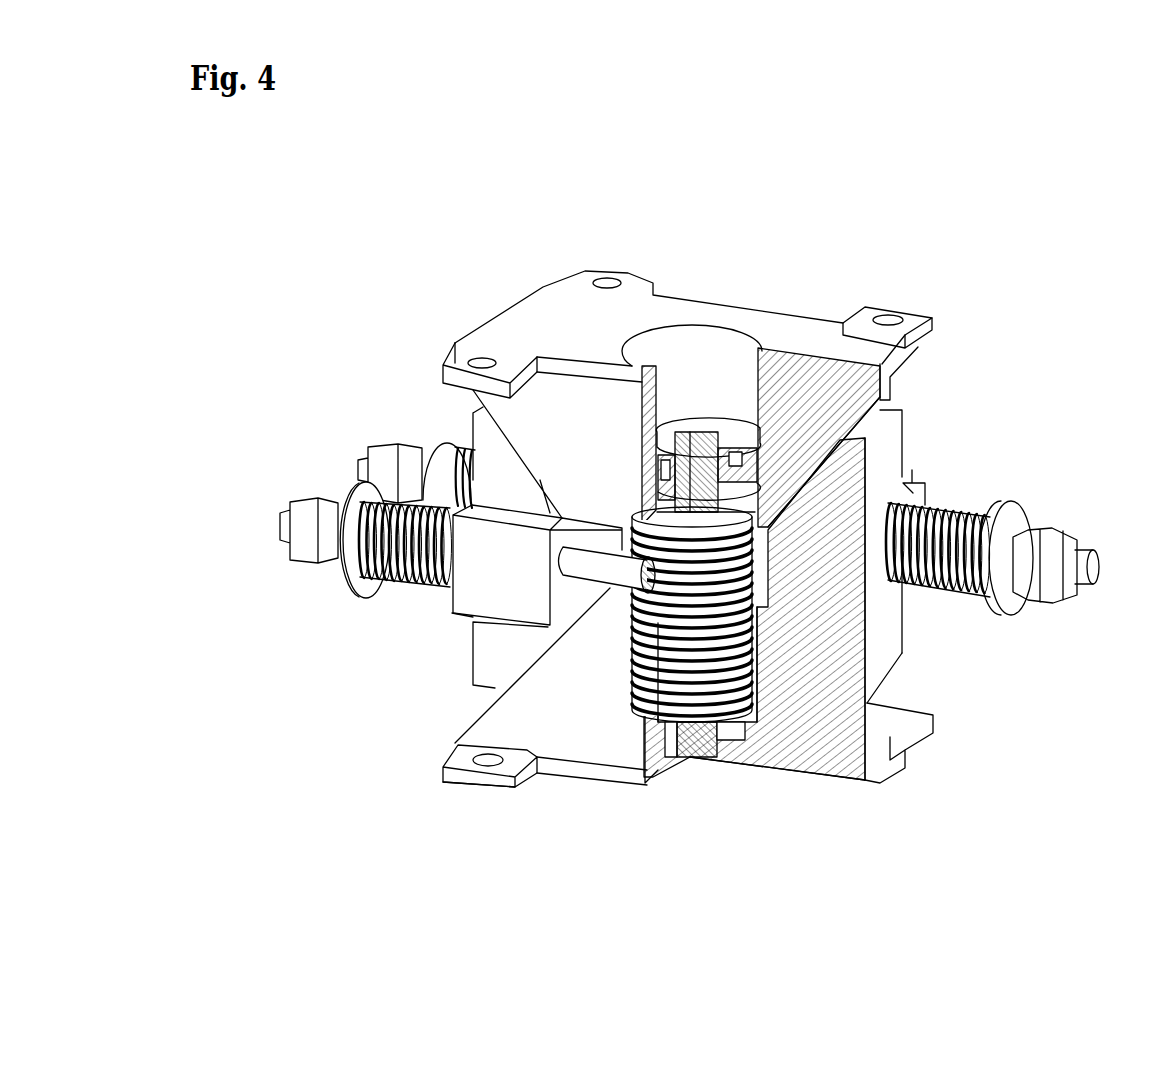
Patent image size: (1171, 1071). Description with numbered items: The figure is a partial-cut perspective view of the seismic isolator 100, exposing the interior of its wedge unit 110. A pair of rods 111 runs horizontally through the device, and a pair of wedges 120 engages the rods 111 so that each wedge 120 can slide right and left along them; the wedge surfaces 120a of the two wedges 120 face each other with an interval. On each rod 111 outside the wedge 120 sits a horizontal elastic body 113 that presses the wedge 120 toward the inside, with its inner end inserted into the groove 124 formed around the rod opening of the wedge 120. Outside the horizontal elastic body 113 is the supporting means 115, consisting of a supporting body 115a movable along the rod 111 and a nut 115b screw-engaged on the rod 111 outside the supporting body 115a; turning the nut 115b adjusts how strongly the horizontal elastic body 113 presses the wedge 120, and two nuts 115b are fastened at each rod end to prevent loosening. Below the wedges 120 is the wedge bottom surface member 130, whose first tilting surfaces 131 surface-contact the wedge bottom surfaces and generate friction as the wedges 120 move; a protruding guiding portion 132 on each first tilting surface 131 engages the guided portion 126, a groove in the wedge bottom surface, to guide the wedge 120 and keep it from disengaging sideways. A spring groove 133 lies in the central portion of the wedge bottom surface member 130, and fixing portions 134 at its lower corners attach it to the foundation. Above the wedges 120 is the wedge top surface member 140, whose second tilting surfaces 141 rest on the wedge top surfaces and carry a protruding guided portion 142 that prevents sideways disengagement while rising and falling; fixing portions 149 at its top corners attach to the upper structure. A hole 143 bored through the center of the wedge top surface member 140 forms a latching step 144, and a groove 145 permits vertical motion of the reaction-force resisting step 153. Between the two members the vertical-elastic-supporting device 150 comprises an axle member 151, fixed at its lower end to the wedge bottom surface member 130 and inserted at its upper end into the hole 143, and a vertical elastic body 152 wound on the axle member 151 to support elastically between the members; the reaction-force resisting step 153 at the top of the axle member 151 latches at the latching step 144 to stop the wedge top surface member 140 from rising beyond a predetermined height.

The seismic isolator 100 is at (350, 274).
The wedge unit 110 is at (936, 486).
The rod 111 is at (1090, 566).
The horizontal elastic body 113 is at (946, 507).
The supporting means 115 is at (1024, 507).
The supporting body 115a is at (1004, 606).
The nut 115b is at (1030, 590).
The wedge 120 is at (450, 598).
The wedge surface 120a is at (720, 758).
The groove 124 is at (905, 590).
The guided portion 126 is at (798, 727).
The wedge bottom surface member 130 is at (830, 755).
The first tilting surface 131 is at (478, 700).
The guiding portion 132 is at (893, 748).
The spring groove 133 is at (492, 766).
The fixing portion 134 is at (446, 752).
The wedge top surface member 140 is at (540, 326).
The second tilting surface 141 is at (472, 400).
The guided portion 142 is at (902, 412).
The hole 143 is at (772, 462).
The latching step 144 is at (652, 432).
The groove 145 is at (650, 340).
The fixing portion 149 is at (920, 310).
The vertical-elastic-supporting device 150 is at (656, 662).
The axle member 151 is at (665, 770).
The vertical elastic body 152 is at (648, 637).
The reaction-force resisting step 153 is at (735, 440).